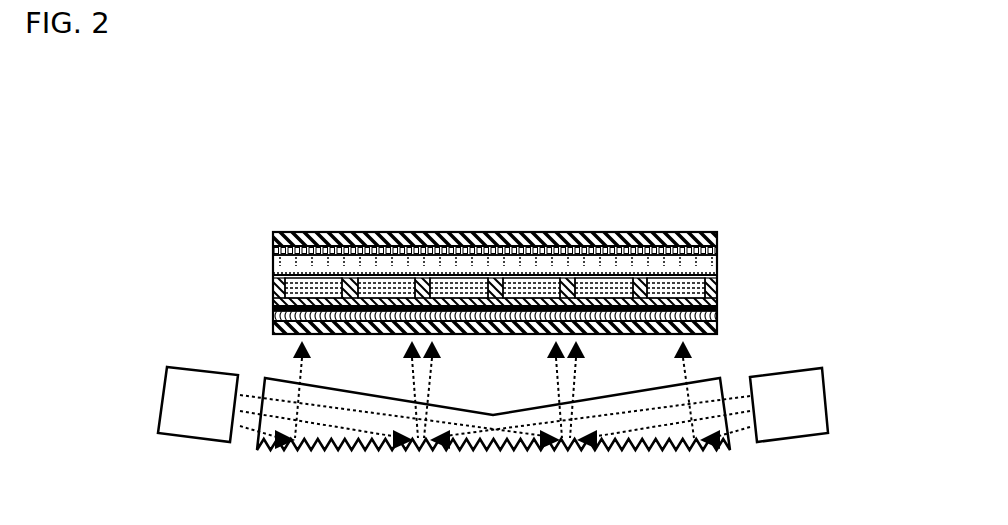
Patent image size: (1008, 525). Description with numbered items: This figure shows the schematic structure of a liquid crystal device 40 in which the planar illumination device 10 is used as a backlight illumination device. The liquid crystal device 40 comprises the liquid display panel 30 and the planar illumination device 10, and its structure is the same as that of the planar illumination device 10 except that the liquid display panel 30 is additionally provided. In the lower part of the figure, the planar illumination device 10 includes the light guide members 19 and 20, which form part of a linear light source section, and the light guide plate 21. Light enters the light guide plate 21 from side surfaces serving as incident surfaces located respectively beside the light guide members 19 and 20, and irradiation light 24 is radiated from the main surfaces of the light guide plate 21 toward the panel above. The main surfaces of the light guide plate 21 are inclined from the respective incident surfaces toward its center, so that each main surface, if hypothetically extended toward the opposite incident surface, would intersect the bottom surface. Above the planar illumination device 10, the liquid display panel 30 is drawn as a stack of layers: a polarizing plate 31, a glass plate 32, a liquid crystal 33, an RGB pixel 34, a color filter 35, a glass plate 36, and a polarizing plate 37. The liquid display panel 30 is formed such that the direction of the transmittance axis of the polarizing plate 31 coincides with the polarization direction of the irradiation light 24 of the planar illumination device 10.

The liquid crystal device 40 is at (188, 130).
The liquid display panel 30 is at (855, 82).
The polarizing plate 37 is at (704, 236).
The glass plate 36 is at (708, 250).
The color filter 35 is at (708, 264).
The RGB pixel 34 is at (710, 277).
The liquid crystal 33 is at (702, 306).
The glass plate 32 is at (703, 316).
The polarizing plate 31 is at (706, 330).
The planar illumination device 10 is at (166, 334).
The light guide member 19 is at (198, 412).
The light guide member 20 is at (795, 412).
The light guide plate 21 is at (615, 425).
The irradiation light 24 is at (300, 383).